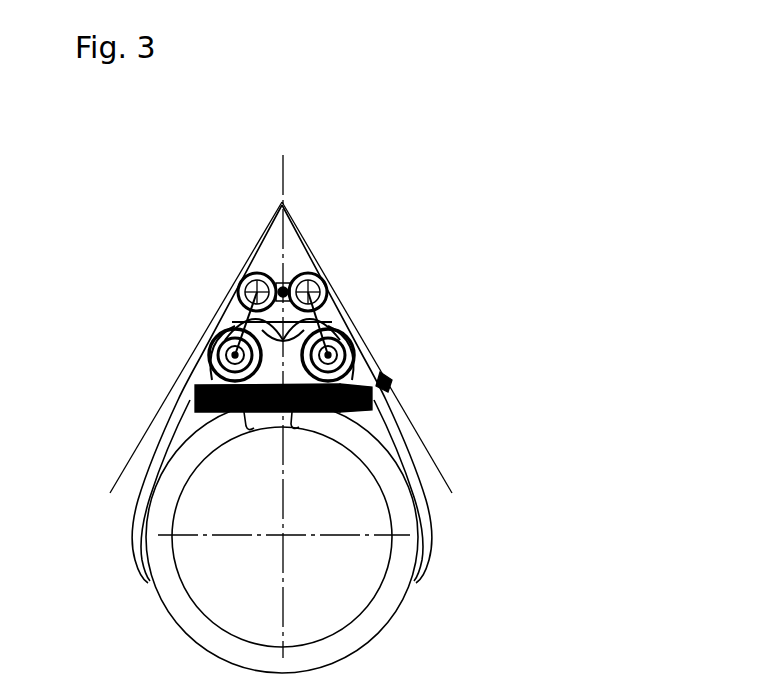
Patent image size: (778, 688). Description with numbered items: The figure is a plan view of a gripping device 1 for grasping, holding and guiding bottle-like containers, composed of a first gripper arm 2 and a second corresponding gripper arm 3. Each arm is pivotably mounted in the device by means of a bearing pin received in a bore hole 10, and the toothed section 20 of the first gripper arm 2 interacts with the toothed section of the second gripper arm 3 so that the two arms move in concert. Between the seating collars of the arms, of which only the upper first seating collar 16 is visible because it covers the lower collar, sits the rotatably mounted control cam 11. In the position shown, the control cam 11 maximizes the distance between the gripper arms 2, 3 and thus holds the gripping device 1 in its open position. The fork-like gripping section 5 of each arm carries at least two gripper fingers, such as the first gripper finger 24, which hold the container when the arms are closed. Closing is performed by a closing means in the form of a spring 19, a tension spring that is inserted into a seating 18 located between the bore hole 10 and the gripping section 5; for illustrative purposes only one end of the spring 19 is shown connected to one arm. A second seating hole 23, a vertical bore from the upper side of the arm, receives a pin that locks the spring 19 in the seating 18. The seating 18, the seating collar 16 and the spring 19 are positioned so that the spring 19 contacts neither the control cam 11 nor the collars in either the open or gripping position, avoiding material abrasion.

The pipe clamping apparatus 1 is at (468, 100).
The first gripper arm 2 is at (445, 293).
The corresponding gripper arm 3 is at (140, 205).
The gripping section 5 is at (472, 560).
The bore hole of gripper arm 10 is at (330, 290).
The control cam 11 is at (248, 420).
The first seating collar 16 is at (352, 318).
The seating 18 is at (397, 377).
The spring 19 is at (293, 420).
The toothed section 20 is at (280, 268).
The second seating hole 23 is at (390, 393).
The first gripper finger of the gripper arm 24 is at (433, 515).